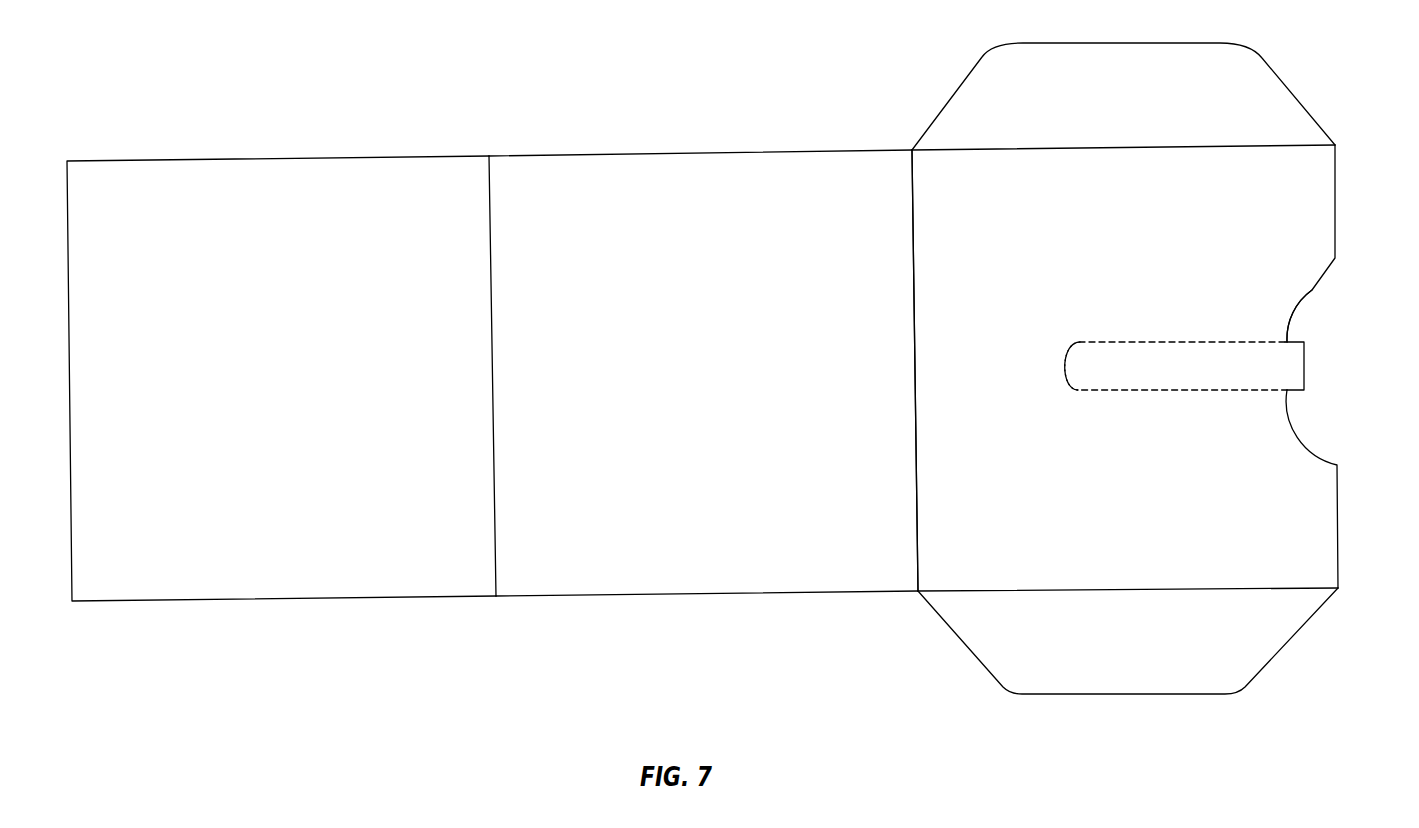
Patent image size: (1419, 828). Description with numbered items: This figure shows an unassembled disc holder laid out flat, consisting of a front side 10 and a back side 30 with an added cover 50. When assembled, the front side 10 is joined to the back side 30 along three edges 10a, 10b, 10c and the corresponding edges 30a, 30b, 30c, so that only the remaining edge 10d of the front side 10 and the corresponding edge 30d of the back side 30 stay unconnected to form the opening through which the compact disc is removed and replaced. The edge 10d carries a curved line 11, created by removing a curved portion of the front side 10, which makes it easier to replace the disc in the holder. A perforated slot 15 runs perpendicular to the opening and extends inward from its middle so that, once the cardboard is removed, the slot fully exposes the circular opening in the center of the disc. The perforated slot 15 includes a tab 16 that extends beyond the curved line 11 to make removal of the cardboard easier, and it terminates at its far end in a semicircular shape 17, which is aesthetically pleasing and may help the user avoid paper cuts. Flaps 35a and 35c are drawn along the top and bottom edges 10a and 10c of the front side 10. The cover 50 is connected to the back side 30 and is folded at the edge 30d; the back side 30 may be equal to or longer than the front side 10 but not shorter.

The front side 10 is at (1152, 389).
The edge of front side 10a is at (1133, 148).
The edge of front side 10b is at (916, 430).
The edge of front side 10c is at (1137, 590).
The edge of front side 10d is at (1335, 208).
The curved line 11 is at (1310, 290).
The perforated slot 15 is at (1127, 342).
The tab 16 is at (1297, 383).
The semicircular shape 17 is at (1066, 355).
The back side 30 is at (703, 378).
The edge of back side 30a is at (580, 153).
The edge of back side 30b is at (916, 372).
The edge of back side 30c is at (587, 596).
The edge of back side 30d is at (493, 377).
The top flap 35a is at (1118, 67).
The bottom flap 35c is at (1125, 667).
The cover 50 is at (238, 585).